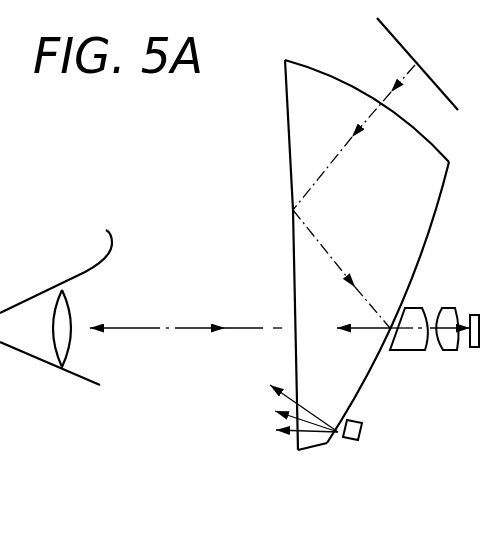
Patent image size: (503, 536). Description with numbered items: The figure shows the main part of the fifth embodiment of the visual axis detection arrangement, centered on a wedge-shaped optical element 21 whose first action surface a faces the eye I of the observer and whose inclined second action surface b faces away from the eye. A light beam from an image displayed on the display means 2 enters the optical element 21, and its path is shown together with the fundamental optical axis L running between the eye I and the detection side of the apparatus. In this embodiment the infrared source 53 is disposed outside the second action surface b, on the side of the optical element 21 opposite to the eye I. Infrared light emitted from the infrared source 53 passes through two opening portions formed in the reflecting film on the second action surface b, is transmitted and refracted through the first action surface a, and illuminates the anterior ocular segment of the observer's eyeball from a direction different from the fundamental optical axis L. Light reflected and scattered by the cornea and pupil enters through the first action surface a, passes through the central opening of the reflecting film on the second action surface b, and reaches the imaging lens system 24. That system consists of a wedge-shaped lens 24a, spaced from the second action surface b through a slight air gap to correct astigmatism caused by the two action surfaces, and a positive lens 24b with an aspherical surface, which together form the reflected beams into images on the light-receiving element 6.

The optical element 21 is at (356, 230).
The display means 2 is at (398, 42).
The first action surface a is at (293, 282).
The second action surface b is at (428, 245).
The fundamental optical axis L is at (338, 152).
The eye of observer I is at (46, 367).
The imaging lens system 24 is at (435, 375).
The wedge-shaped lens 24a is at (410, 352).
The positive lens 24b is at (462, 355).
The light-receiving element 6 is at (475, 314).
The infrared source 53 is at (352, 441).